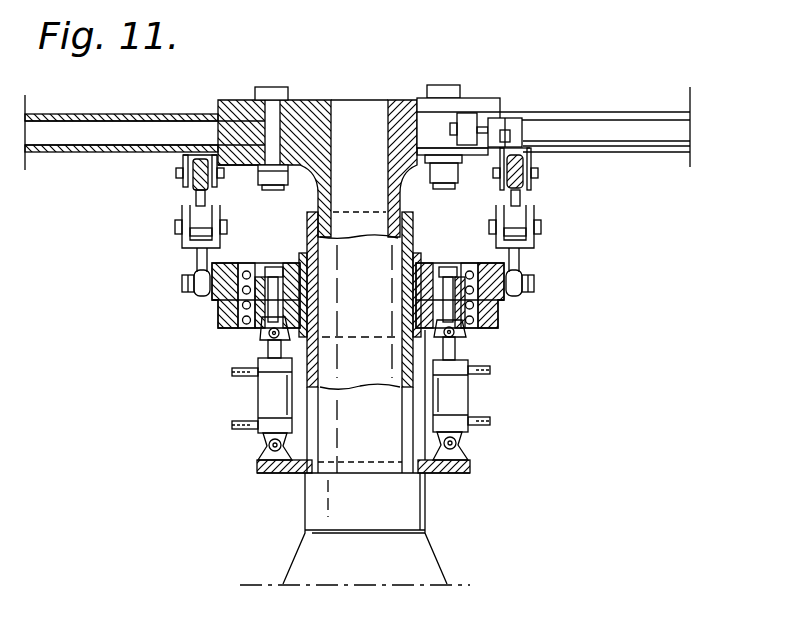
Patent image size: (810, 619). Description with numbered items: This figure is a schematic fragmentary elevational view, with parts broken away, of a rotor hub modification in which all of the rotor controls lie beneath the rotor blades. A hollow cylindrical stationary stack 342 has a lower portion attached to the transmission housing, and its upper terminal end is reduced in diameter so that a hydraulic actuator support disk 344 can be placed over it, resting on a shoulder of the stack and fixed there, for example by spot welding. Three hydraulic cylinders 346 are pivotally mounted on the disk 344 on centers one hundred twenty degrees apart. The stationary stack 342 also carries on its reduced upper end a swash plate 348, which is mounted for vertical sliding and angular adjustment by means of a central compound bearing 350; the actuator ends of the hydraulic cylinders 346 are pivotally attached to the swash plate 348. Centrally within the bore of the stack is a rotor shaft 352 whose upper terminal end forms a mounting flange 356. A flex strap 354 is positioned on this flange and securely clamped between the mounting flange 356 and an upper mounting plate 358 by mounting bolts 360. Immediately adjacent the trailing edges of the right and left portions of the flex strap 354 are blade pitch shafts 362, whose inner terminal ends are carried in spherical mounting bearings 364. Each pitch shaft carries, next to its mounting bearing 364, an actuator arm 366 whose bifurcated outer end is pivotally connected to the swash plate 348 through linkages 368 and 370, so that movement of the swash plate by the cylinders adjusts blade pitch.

The stationary stack 342 is at (425, 501).
The hydraulic actuator support disk 344 is at (272, 476).
The hydraulic cylinders 346 is at (265, 393).
The swash plate 348 is at (507, 317).
The central compound bearing 350 is at (418, 277).
The rotor shaft 352 is at (372, 287).
The flex strap 354 is at (143, 114).
The mounting flange 356 is at (249, 167).
The upper mounting plate 358 is at (320, 100).
The mounting bolts 360 is at (272, 87).
The blade pitch shafts 362 is at (590, 112).
The spherical mounting bearings 364 is at (470, 113).
The actuator arm 366 is at (183, 160).
The linkage 368 is at (545, 207).
The linkage 370 is at (173, 205).